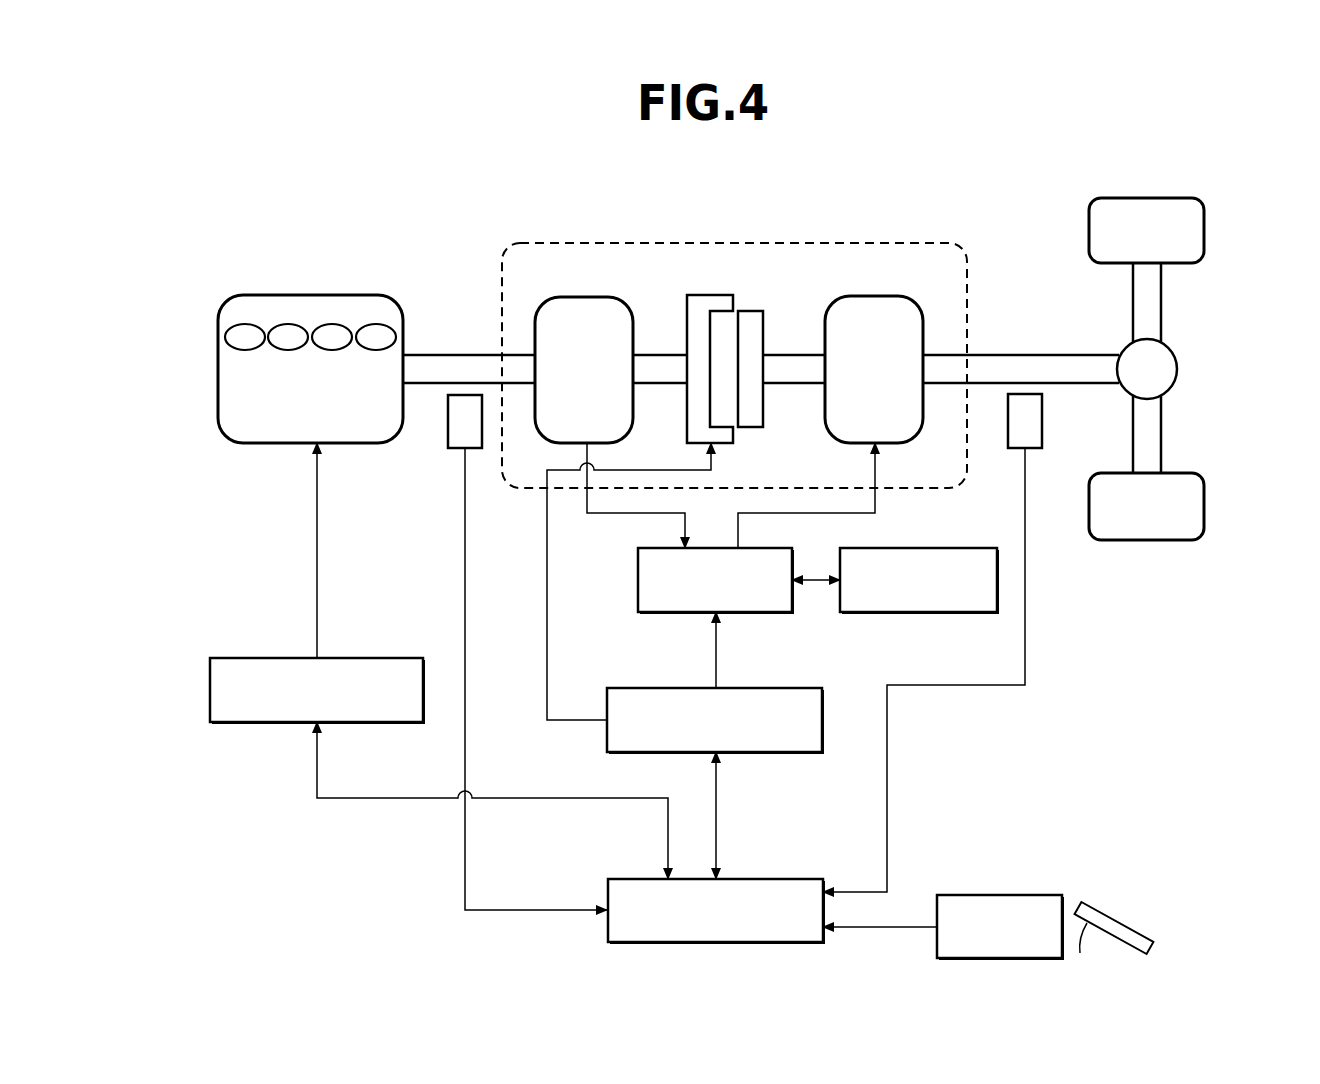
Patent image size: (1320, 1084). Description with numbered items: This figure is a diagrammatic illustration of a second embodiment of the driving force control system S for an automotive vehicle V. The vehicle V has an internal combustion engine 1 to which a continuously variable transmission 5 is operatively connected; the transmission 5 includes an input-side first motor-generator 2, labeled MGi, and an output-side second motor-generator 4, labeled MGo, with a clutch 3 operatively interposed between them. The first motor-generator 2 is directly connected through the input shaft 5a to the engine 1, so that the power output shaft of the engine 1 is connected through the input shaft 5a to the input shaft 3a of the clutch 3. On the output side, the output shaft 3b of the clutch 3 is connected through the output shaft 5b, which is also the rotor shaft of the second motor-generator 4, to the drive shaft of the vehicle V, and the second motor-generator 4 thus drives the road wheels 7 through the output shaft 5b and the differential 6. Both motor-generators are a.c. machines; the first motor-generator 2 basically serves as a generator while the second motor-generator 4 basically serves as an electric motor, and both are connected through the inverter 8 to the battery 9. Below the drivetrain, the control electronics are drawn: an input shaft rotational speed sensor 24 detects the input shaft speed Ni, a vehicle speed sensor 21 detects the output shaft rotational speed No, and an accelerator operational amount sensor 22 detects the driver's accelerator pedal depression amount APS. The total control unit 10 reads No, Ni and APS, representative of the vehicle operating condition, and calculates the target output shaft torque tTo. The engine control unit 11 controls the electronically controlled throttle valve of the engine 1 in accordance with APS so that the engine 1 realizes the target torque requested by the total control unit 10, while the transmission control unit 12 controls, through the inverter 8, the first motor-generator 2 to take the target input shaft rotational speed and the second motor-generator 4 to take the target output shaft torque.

The internal combustion engine 1 is at (330, 295).
The first motor-generator 2 is at (577, 297).
The clutch 3 is at (715, 295).
The input shaft of the clutch 3a is at (661, 366).
The output shaft of the clutch 3b is at (789, 366).
The second motor-generator 4 is at (870, 296).
The continuously variable transmission 5 is at (892, 243).
The input shaft of the transmission 5a is at (519, 366).
The output shaft of the transmission 5b is at (941, 366).
The differential 6 is at (1177, 369).
The road wheels 7 is at (1204, 228).
The inverter 8 is at (638, 580).
The battery 9 is at (940, 548).
The total control unit 10 is at (753, 879).
The engine control unit 11 is at (268, 658).
The transmission control unit 12 is at (750, 688).
The vehicle speed sensor 21 is at (1042, 428).
The accelerator operational amount sensor 22 is at (1003, 895).
The input shaft rotational speed sensor 24 is at (448, 420).
The vehicle V is at (858, 217).
The driving force control system S is at (1000, 744).